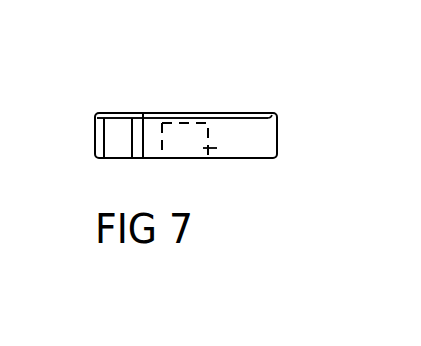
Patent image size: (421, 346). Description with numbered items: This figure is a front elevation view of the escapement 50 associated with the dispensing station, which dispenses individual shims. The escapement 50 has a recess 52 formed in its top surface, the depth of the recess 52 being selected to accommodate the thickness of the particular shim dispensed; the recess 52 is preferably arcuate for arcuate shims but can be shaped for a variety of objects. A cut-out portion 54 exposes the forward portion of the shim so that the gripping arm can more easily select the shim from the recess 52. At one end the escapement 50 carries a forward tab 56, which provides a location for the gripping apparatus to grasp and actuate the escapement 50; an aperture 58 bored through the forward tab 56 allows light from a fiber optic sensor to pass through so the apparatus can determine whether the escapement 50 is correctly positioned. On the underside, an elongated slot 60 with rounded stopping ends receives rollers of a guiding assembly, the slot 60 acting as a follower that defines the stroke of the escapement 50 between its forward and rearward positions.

The escapement 50 is at (277, 132).
The recess 52 is at (233, 113).
The cut-out portion 54 is at (158, 164).
The forward tab 56 is at (95, 134).
The aperture 58 is at (118, 118).
The elongated slot 60 is at (217, 148).